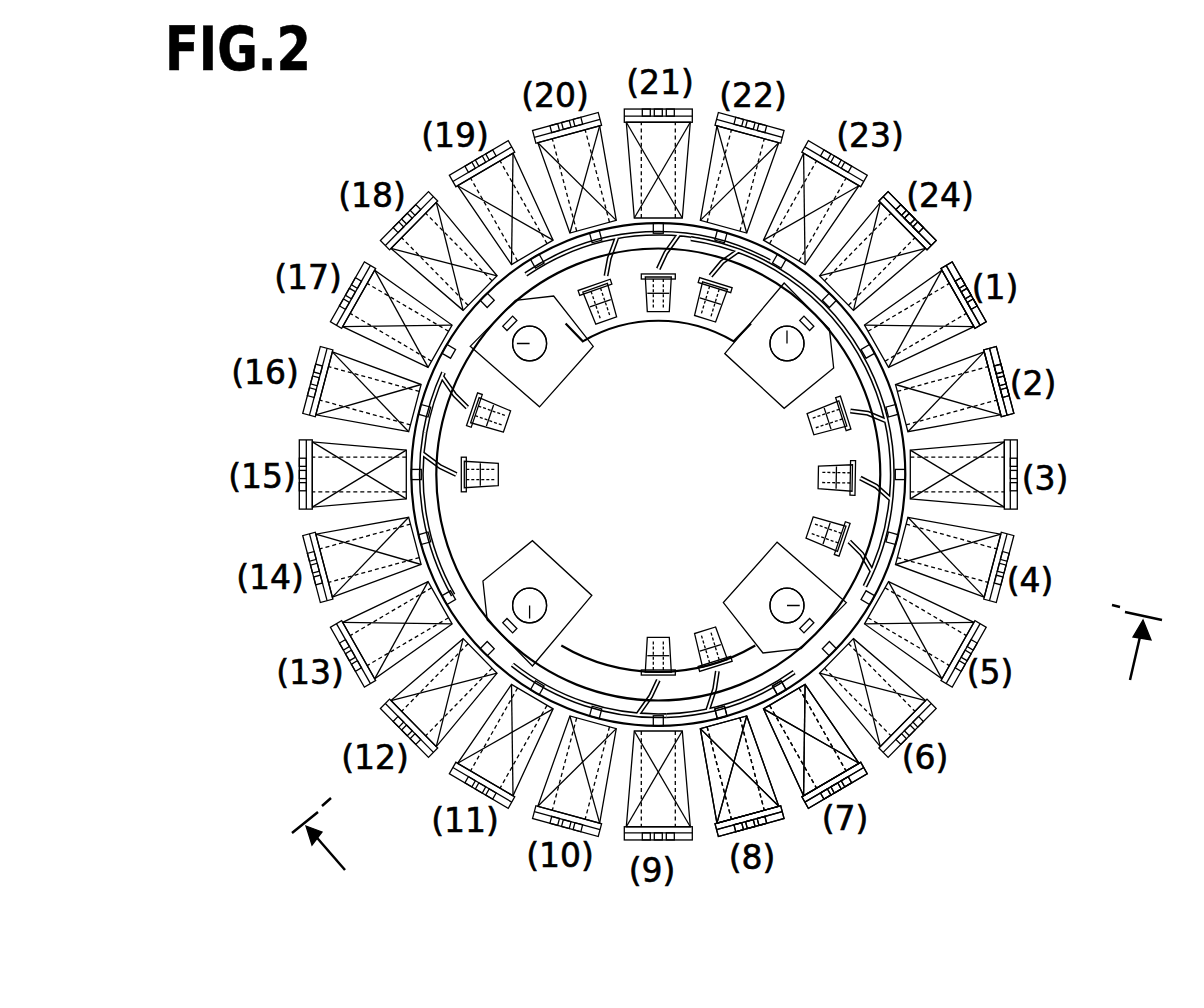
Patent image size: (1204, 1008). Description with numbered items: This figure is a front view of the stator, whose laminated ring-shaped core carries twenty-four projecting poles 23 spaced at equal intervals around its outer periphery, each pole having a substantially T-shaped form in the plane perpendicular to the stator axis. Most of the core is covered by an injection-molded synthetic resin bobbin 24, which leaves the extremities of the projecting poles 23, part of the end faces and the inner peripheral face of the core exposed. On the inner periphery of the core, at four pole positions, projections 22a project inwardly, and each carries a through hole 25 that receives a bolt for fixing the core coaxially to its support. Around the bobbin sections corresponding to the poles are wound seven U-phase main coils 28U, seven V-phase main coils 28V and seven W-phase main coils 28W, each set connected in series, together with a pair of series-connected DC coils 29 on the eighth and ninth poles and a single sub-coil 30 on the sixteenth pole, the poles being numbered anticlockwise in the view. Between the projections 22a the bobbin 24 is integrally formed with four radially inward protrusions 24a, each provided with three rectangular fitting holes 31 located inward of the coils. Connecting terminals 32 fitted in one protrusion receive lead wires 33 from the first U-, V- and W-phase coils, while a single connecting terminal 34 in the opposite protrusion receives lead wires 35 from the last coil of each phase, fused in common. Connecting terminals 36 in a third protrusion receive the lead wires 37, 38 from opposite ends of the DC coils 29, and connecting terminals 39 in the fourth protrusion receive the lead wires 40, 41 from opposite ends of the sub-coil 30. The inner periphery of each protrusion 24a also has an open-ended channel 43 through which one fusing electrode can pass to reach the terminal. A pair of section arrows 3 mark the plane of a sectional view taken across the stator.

The section line III-III 3 is at (734, 752).
The projections 22a is at (540, 373).
The projecting poles 23 is at (940, 235).
The bobbin 24 is at (627, 718).
The protrusions 24a is at (718, 390).
The through holes 25 is at (545, 355).
The U-phase main coils 28U is at (556, 236).
The V-phase main coils 28V is at (620, 217).
The W-phase main coils 28W is at (687, 216).
The DC coils 29 is at (805, 775).
The sub-coil 30 is at (420, 372).
The fitting holes 31 is at (645, 600).
The connecting terminals 32 is at (792, 498).
The lead wires 33 is at (908, 500).
The connecting terminal 34 is at (640, 325).
The lead wires 35 is at (776, 258).
The connecting terminals 36 is at (705, 635).
The lead wire 37 is at (775, 690).
The lead wire 38 is at (648, 708).
The connecting terminals 39 is at (520, 447).
The lead wire 40 is at (415, 482).
The lead wire 41 is at (432, 368).
The channel 43 is at (870, 329).